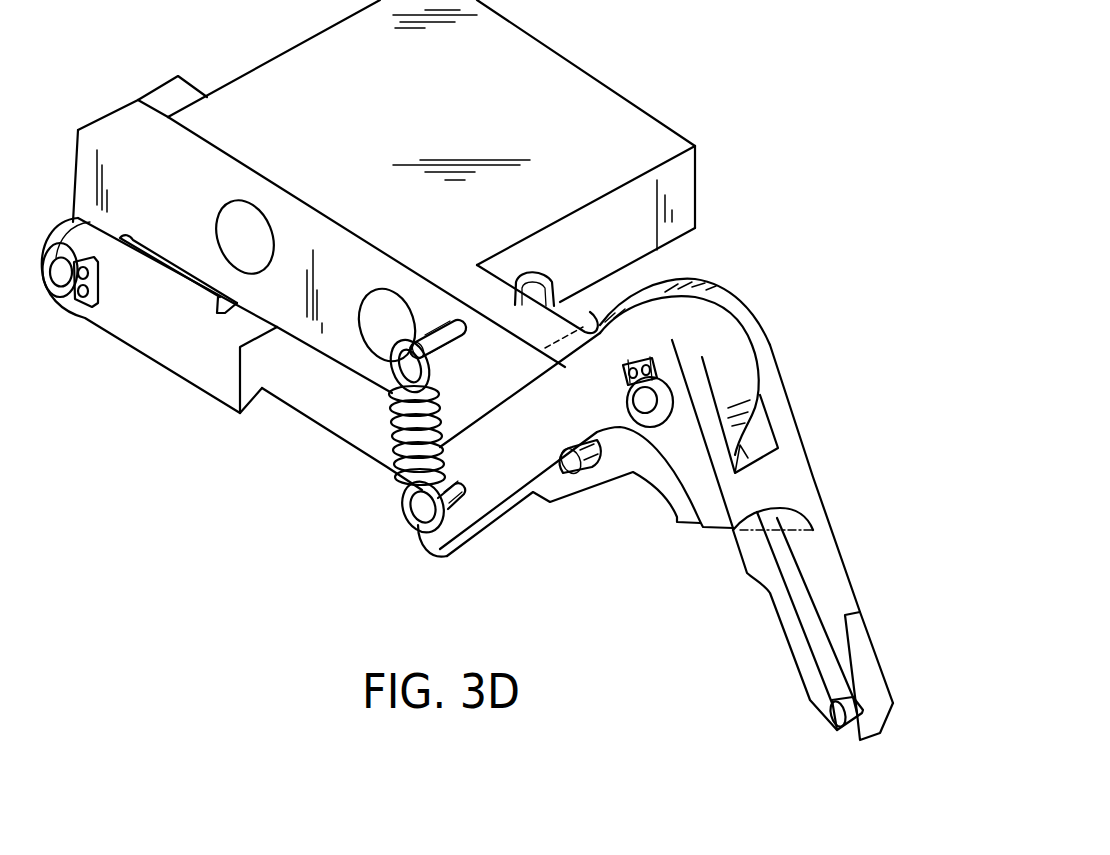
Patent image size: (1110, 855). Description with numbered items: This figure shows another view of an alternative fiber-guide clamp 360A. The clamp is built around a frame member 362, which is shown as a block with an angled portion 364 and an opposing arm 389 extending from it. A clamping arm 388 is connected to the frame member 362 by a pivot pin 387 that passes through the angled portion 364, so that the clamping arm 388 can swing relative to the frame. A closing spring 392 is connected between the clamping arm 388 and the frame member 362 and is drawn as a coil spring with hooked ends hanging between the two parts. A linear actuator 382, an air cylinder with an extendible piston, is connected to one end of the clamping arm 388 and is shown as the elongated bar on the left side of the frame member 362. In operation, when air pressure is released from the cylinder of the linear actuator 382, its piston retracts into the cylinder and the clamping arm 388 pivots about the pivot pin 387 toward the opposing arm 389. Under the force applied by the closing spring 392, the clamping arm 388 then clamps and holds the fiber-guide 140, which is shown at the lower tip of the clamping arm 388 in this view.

The fiber-guide clamp 360A is at (630, 72).
The frame member 362 is at (697, 174).
The angled portion 364 is at (722, 342).
The linear actuator 382 is at (313, 427).
The pivot pin 387 is at (645, 405).
The clamping arm 388 is at (840, 544).
The opposing arm 389 is at (798, 673).
The closing spring 392 is at (390, 428).
The fiber-guide 140 is at (847, 731).